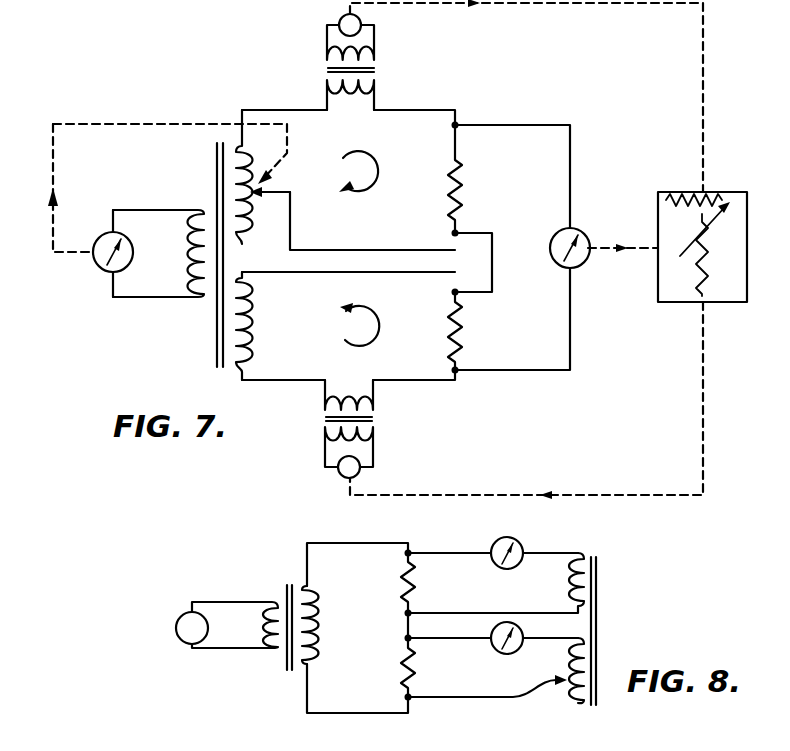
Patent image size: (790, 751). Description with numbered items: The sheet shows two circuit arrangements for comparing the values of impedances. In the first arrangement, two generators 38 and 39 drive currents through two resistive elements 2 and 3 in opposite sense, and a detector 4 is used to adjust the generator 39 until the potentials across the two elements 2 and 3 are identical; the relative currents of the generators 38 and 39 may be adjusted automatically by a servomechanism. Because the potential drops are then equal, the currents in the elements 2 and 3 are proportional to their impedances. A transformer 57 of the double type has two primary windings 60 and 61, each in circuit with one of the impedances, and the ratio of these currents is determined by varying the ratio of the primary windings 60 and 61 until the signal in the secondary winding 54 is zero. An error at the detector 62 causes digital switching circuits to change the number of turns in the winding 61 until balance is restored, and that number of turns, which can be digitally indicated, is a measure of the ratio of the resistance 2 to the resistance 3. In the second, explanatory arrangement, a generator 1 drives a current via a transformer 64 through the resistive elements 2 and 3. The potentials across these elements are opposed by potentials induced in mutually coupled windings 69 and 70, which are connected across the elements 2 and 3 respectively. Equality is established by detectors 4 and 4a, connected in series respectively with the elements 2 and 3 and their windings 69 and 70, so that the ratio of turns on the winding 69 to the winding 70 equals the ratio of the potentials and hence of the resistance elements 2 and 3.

In FIG. 7, the generator 38 is at (340, 21).
In FIG. 7, the generator 39 is at (341, 476).
In FIG. 7, the primary winding 60 is at (235, 148).
In FIG. 7, the primary winding 61 is at (251, 330).
In FIG. 7, the secondary winding 54 is at (200, 212).
In FIG. 7, the transformer 57 is at (212, 333).
In FIG. 7, the detector 62 is at (107, 277).
In FIG. 7, the resistive element 2 is at (460, 192).
In FIG. 8, the resistive element 2 is at (401, 580).
In FIG. 7, the resistive element 3 is at (463, 346).
In FIG. 8, the resistive element 3 is at (402, 676).
In FIG. 7, the detector 4 is at (582, 266).
In FIG. 8, the detector 4 is at (521, 545).
In FIG. 8, the generator 1 is at (172, 633).
In FIG. 8, the transformer 64 is at (280, 663).
In FIG. 8, the winding 69 is at (574, 590).
In FIG. 8, the winding 70 is at (568, 661).
In FIG. 8, the detector 4a is at (498, 652).